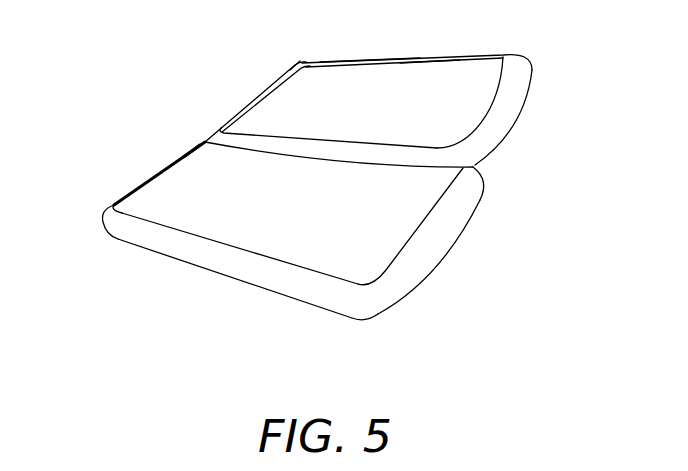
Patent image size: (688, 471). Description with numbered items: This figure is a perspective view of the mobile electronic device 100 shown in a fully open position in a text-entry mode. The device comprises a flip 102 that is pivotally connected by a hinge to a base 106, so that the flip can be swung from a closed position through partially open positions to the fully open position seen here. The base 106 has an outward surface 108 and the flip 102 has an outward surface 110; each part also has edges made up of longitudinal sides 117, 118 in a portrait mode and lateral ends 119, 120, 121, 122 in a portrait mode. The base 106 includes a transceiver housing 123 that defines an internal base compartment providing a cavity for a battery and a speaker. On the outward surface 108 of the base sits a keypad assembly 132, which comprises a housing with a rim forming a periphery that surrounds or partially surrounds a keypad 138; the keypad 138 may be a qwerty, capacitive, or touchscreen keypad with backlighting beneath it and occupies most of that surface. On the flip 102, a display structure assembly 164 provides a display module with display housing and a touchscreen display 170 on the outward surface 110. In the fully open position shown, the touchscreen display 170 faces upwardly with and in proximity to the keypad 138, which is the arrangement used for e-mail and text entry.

The mobile electronic device 100 is at (174, 45).
The flip 102 is at (528, 66).
The base 106 is at (447, 257).
The outward surface 108 is at (137, 222).
The outward surface 110 is at (296, 63).
The longitudinal side 117 is at (208, 268).
The longitudinal side 118 is at (365, 58).
The lateral end 119 is at (145, 181).
The lateral end 120 is at (277, 75).
The lateral end 121 is at (522, 112).
The lateral end 122 is at (482, 207).
The transceiver housing 123 is at (112, 204).
The keypad assembly 132 is at (193, 157).
The keypad 138 is at (315, 263).
The display structure assembly 164 is at (468, 132).
The touchscreen display 170 is at (434, 72).